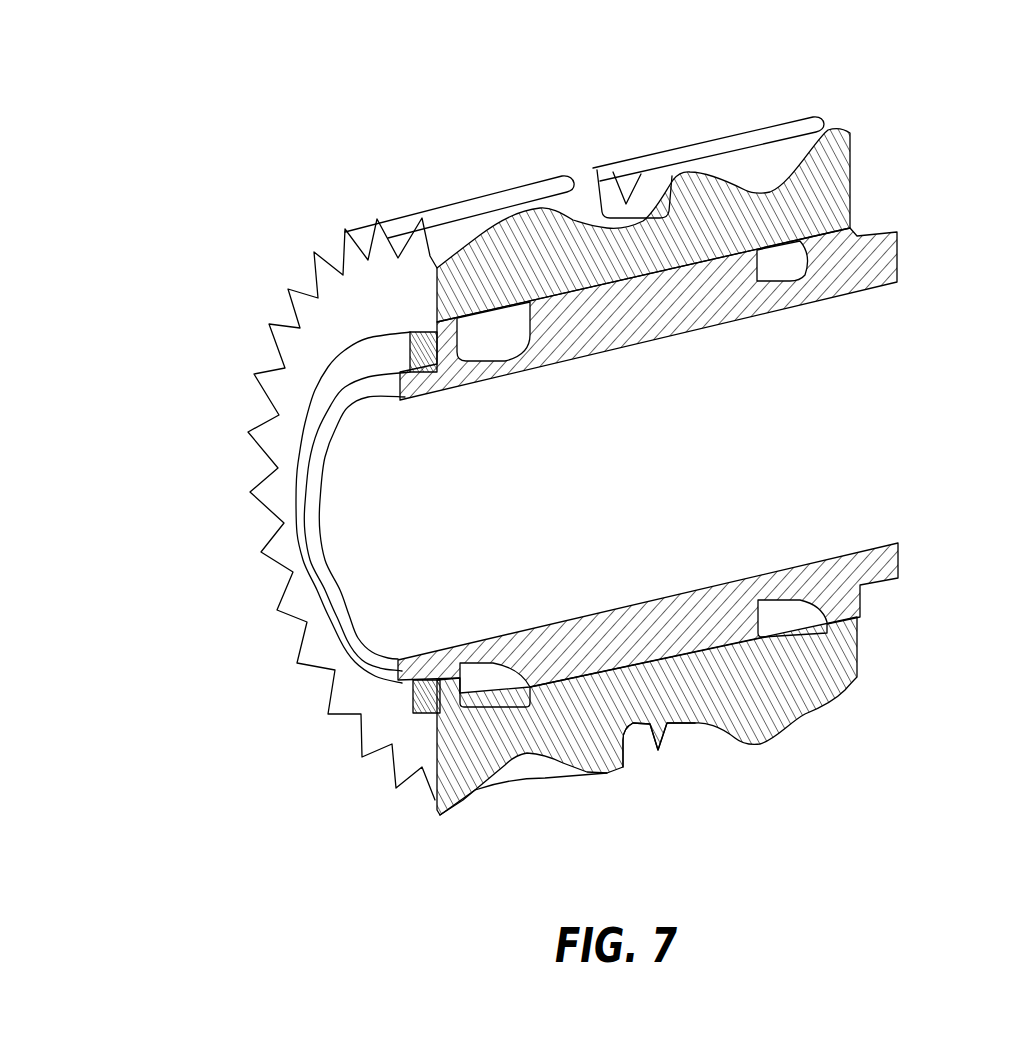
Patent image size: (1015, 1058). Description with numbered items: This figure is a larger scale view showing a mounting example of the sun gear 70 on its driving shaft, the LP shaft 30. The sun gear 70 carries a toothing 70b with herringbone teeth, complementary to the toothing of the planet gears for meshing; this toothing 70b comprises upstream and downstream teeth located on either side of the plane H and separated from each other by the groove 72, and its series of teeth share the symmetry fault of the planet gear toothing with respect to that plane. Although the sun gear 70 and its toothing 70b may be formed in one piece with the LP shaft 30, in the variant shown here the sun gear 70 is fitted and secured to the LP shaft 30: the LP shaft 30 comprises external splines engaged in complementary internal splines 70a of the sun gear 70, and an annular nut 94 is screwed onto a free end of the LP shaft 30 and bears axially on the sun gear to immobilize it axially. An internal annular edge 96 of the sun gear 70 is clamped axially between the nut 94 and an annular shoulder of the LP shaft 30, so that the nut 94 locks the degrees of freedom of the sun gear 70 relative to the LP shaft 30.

The LP shaft 30 is at (897, 267).
The sun gear 70 is at (586, 469).
The internal splines 70a is at (637, 673).
The toothing 70b is at (723, 172).
The groove 72 is at (630, 750).
The annular nut 94 is at (378, 358).
The internal annular edge 96 is at (437, 708).